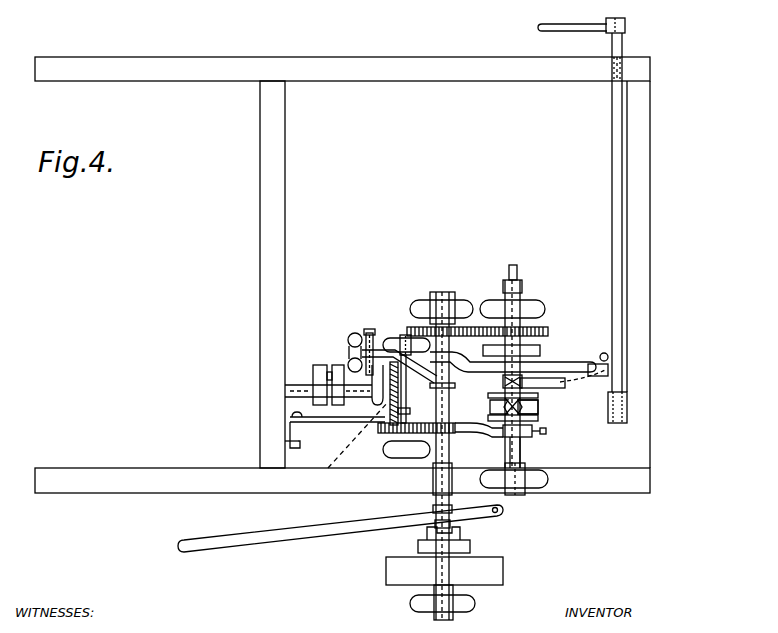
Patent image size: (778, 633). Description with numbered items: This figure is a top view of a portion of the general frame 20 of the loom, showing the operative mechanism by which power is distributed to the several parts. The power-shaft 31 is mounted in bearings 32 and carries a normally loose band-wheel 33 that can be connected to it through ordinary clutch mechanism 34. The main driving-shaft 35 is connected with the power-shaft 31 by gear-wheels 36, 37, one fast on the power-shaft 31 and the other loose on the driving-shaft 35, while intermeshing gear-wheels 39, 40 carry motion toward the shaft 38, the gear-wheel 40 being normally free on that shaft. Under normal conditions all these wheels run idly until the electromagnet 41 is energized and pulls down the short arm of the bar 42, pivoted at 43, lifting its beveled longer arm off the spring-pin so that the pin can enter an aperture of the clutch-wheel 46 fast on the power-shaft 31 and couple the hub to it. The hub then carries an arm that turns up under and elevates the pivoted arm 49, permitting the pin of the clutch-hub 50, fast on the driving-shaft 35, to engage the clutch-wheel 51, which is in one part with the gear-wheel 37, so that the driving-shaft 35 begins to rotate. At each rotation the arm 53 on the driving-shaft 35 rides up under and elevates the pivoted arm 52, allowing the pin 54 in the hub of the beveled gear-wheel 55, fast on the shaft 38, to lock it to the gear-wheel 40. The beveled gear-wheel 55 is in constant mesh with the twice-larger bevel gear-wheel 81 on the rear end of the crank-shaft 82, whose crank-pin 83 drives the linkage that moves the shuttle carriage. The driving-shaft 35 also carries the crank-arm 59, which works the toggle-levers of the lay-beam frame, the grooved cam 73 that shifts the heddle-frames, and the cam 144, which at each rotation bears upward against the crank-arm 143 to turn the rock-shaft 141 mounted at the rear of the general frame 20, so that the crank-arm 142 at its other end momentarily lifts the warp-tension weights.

The general frame 20 is at (356, 275).
The power-shaft 31 is at (436, 478).
The bearings 32 is at (418, 292).
The band-wheel 33 is at (457, 571).
The clutch mechanism 34 is at (465, 545).
The main driving-shaft 35 is at (520, 452).
The gear-wheel 36 is at (402, 335).
The gear-wheel 37 is at (546, 326).
The shaft 38 is at (367, 330).
The gear-wheel 39 is at (455, 434).
The gear-wheel 40 is at (386, 426).
The electromagnet 41 is at (347, 340).
The bar 42 is at (348, 362).
The pivot 43 is at (360, 336).
The clutch-wheel 46 is at (450, 386).
The pivoted arm 49 is at (573, 362).
The clutch-hub 50 is at (503, 380).
The clutch-wheel 51 is at (483, 350).
The pivoted arm 52 is at (340, 423).
The arm 53 is at (536, 435).
The pin 54 is at (406, 412).
The beveled gear-wheel 55 is at (419, 412).
The crank-arm 59 is at (521, 283).
The cam 73 is at (538, 407).
The bevel gear-wheel 81 is at (345, 444).
The crank-shaft 82 is at (285, 391).
The crank-pin 83 is at (318, 365).
The rock-shaft 141 is at (622, 232).
The crank-arm 142 is at (581, 18).
The crank-arm 143 is at (627, 375).
The cam 144 is at (540, 385).